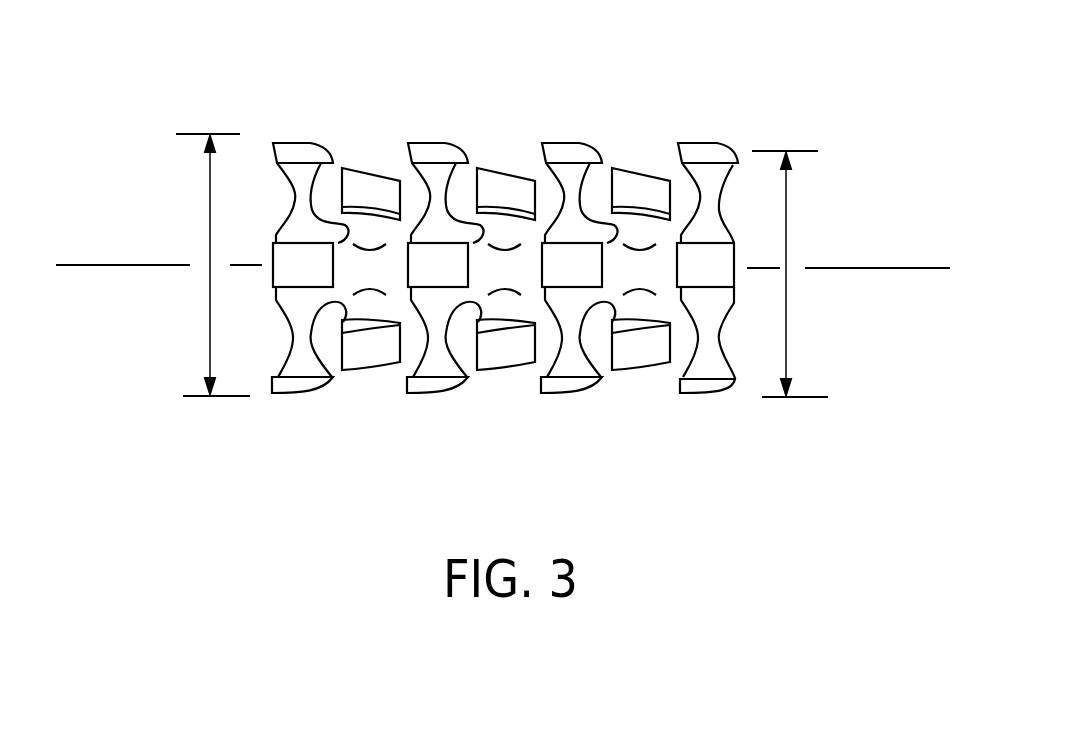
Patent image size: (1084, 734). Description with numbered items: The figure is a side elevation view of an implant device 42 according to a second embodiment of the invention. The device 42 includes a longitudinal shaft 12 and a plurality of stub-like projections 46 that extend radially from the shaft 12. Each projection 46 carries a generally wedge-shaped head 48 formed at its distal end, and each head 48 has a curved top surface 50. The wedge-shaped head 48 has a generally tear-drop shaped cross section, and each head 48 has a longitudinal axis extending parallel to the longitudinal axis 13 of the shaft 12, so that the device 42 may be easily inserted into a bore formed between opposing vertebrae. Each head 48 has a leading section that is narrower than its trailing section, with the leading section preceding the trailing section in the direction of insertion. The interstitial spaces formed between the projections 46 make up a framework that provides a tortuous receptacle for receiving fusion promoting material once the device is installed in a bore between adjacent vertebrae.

The longitudinal shaft 12 is at (385, 265).
The longitudinal axis 13 is at (890, 270).
The implant device 42 is at (812, 122).
The stub-like projection 46 is at (537, 280).
The wedge-shaped head 48 is at (735, 370).
The curved top surface 50 is at (693, 388).